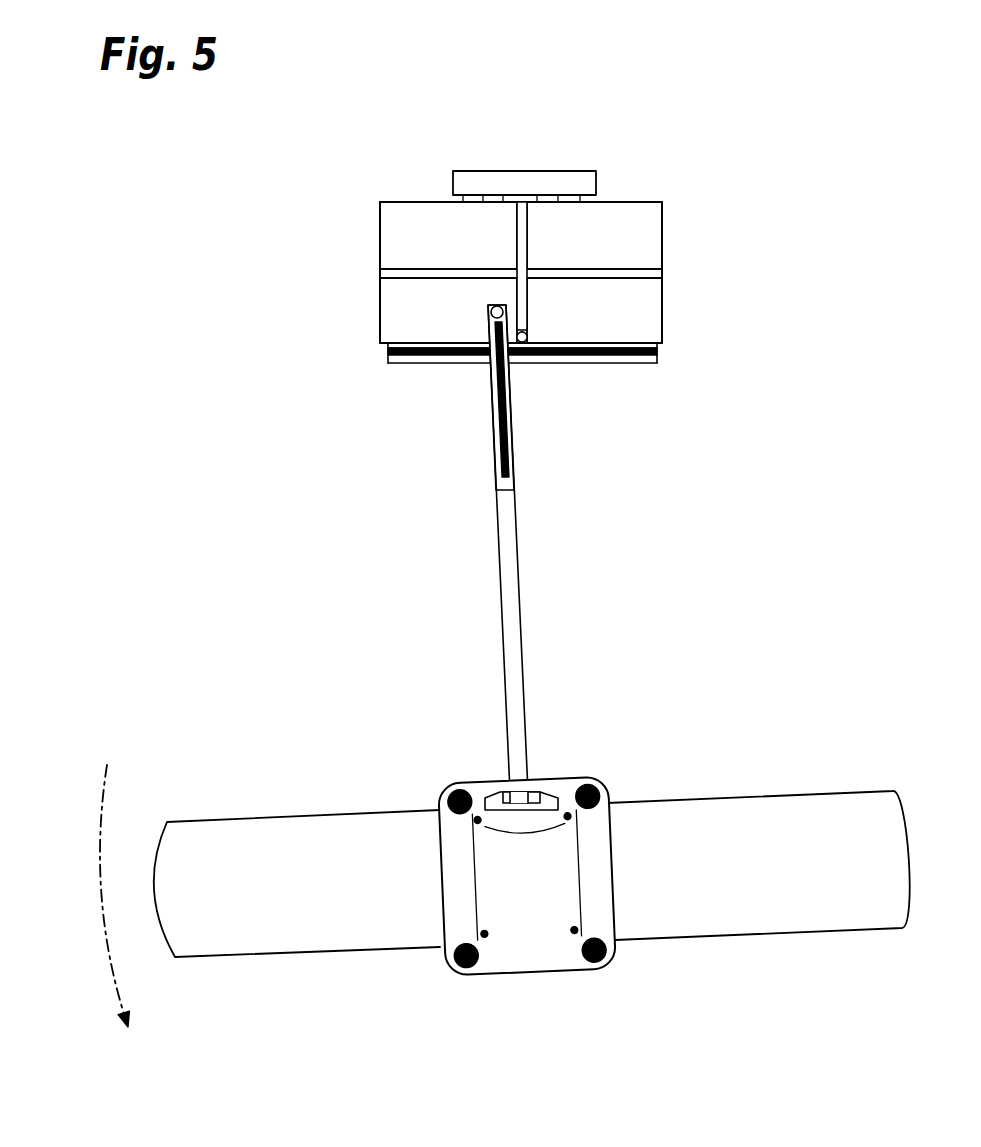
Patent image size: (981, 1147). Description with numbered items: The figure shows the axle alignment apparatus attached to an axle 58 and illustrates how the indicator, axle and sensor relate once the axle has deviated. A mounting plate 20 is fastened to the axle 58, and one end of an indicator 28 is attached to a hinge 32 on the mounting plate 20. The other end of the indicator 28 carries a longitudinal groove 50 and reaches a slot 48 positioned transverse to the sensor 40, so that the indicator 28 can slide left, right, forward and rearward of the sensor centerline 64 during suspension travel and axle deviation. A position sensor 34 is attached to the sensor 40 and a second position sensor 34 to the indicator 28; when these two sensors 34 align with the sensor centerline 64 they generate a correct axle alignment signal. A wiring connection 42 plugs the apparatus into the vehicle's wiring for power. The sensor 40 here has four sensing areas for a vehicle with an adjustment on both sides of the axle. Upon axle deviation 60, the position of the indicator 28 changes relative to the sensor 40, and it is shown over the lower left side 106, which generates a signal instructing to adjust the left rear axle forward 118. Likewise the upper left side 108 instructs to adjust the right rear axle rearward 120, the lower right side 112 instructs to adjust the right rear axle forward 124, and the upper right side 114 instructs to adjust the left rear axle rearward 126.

The mounting plate 20 is at (495, 968).
The indicator 28 is at (512, 567).
The hinge 32 is at (498, 782).
The position sensor 34 is at (491, 316).
The sensor 40 is at (572, 279).
The wiring connection 42 is at (470, 181).
The slot 48 is at (648, 364).
The longitudinal groove 50 is at (500, 383).
The axle 58 is at (675, 803).
The deviation 60 is at (102, 858).
The sensor centerline 64 is at (530, 208).
The lower left side 106 is at (379, 308).
The upper left side 108 is at (379, 233).
The lower right side 112 is at (664, 307).
The upper right side 114 is at (664, 236).
The adjust left rear axle forward 118 is at (448, 310).
The adjust right rear axle rearward 120 is at (448, 235).
The adjust right rear axle forward 124 is at (594, 310).
The adjust left rear axle rearward 126 is at (594, 235).